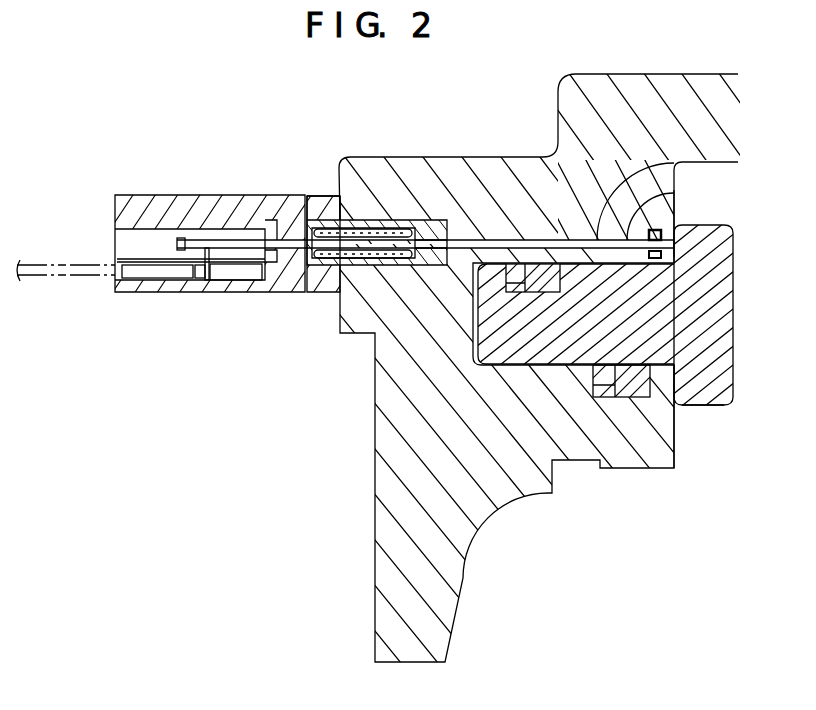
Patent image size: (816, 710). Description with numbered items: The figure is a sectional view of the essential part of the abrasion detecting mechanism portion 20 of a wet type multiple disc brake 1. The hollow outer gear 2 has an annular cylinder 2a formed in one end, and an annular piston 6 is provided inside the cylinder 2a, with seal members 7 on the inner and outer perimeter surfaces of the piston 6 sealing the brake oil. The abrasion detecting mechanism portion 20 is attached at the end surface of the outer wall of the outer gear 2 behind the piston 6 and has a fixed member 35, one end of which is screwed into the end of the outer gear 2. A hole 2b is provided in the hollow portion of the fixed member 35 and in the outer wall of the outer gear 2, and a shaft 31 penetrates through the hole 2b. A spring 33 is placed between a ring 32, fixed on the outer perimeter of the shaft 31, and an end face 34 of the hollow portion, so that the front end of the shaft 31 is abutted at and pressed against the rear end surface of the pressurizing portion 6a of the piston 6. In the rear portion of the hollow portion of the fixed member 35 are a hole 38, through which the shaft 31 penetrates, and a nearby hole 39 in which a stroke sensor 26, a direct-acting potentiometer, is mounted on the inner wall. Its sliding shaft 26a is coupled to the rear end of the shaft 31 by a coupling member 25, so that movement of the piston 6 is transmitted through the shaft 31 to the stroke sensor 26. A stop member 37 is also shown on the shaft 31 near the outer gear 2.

The wet type multiple disc brake 1 is at (630, 68).
The outer gear 2 is at (494, 157).
The annular cylinder 2a is at (537, 362).
The hole 2b is at (662, 157).
The annular piston 6 is at (734, 305).
The pressurizing portion 6a is at (706, 407).
The seal members 7 is at (538, 264).
The abrasion detecting mechanism portion 20 is at (205, 126).
The coupling member 25 is at (219, 238).
The stroke sensor 26 is at (152, 281).
The sliding shaft 26a is at (203, 292).
The shaft 31 is at (675, 190).
The ring 32 is at (432, 218).
The spring 33 is at (396, 226).
The end face 34 is at (318, 220).
The fixed member 35 is at (320, 293).
The stop ring 37 is at (661, 229).
The hole 38 is at (143, 232).
The hole 39 is at (250, 281).